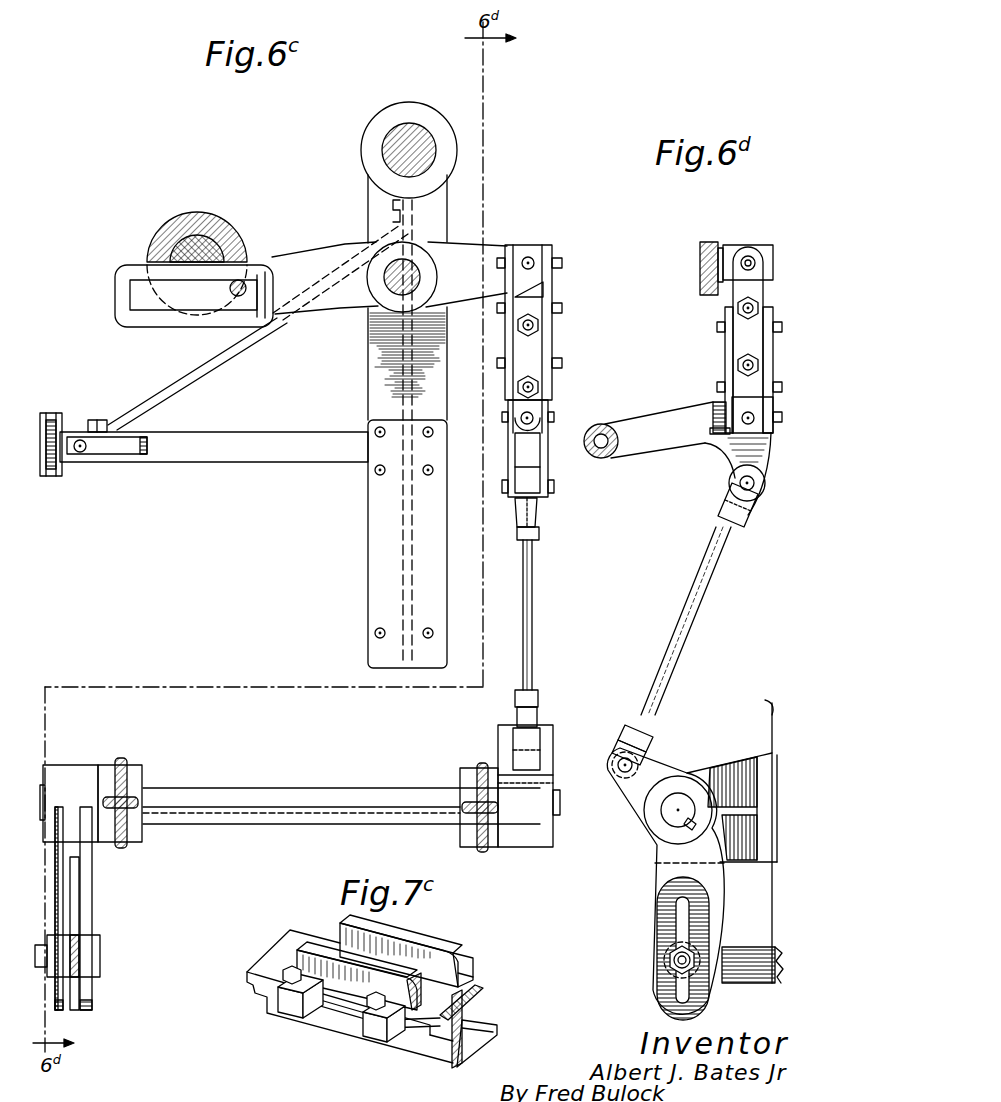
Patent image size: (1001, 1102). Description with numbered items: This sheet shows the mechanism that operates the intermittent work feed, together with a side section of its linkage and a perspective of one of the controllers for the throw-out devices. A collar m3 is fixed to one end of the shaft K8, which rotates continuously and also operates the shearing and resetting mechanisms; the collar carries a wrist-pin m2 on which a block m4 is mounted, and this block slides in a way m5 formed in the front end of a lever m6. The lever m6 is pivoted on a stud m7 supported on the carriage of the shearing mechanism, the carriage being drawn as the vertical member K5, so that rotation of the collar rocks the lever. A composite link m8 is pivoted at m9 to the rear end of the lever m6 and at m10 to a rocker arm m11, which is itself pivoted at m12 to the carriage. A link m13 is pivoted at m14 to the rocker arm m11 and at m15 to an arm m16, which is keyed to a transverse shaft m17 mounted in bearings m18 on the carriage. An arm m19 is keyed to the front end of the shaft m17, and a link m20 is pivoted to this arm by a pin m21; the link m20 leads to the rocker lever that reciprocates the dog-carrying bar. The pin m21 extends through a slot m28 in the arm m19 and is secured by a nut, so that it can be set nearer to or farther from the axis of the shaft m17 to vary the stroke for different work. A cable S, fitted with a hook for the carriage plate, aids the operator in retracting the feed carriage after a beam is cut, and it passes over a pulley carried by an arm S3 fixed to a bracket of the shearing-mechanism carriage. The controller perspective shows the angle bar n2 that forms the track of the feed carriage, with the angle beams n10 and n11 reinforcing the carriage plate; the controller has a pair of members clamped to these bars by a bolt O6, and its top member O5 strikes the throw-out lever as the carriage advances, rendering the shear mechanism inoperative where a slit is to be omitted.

In FIG. 6C, the vertical bar K5 is at (388, 537).
In FIG. 6C, the shaft K8 is at (207, 247).
In FIG. 6C, the wrist-pin m2 is at (254, 263).
In FIG. 6C, the collar m3 is at (186, 218).
In FIG. 6C, the block m4 is at (240, 298).
In FIG. 6C, the way m5 is at (147, 327).
In FIG. 6C, the lever m6 is at (328, 308).
In FIG. 6D, the lever m6 is at (714, 243).
In FIG. 6C, the stud m7 is at (420, 270).
In FIG. 6C, the composite link m8 is at (546, 347).
In FIG. 6D, the composite link m8 is at (732, 356).
In FIG. 6C, the pivot m9 is at (534, 264).
In FIG. 6D, the pivot m9 is at (774, 261).
In FIG. 6D, the pivot m10 is at (751, 421).
In FIG. 6C, the rocker arm m11 is at (550, 482).
In FIG. 6D, the rocker arm m11 is at (663, 452).
In FIG. 6D, the pivot m12 is at (600, 432).
In FIG. 6C, the link m13 is at (533, 620).
In FIG. 6D, the link m13 is at (698, 608).
In FIG. 6C, the pivot m14 is at (506, 494).
In FIG. 6D, the pivot m14 is at (747, 515).
In FIG. 6C, the pivot m15 is at (556, 736).
In FIG. 6D, the pivot m15 is at (632, 765).
In FIG. 6C, the arm m16 is at (502, 760).
In FIG. 6D, the arm m16 is at (640, 802).
In FIG. 6C, the transverse shaft m17 is at (363, 820).
In FIG. 6D, the transverse shaft m17 is at (675, 818).
In FIG. 6C, the bearings m18 is at (482, 858).
In FIG. 6D, the bearings m18 is at (738, 766).
In FIG. 6C, the arm m19 is at (92, 910).
In FIG. 6D, the arm m19 is at (663, 876).
In FIG. 6C, the link m20 is at (100, 967).
In FIG. 6D, the link m20 is at (763, 960).
In FIG. 6C, the pivot pin m21 is at (45, 957).
In FIG. 6D, the pivot pin m21 is at (680, 964).
In FIG. 6D, the slot m28 is at (667, 934).
In FIG. 6C, the cable S is at (60, 472).
In FIG. 6C, the arm S3 is at (193, 462).
In FIG. 7C, the top member O5 is at (363, 1022).
In FIG. 7C, the bolt O6 is at (463, 966).
In FIG. 7C, the angle bar n2 is at (472, 983).
In FIG. 7C, the angle beam n10 is at (478, 996).
In FIG. 7C, the angle beam n11 is at (433, 1037).